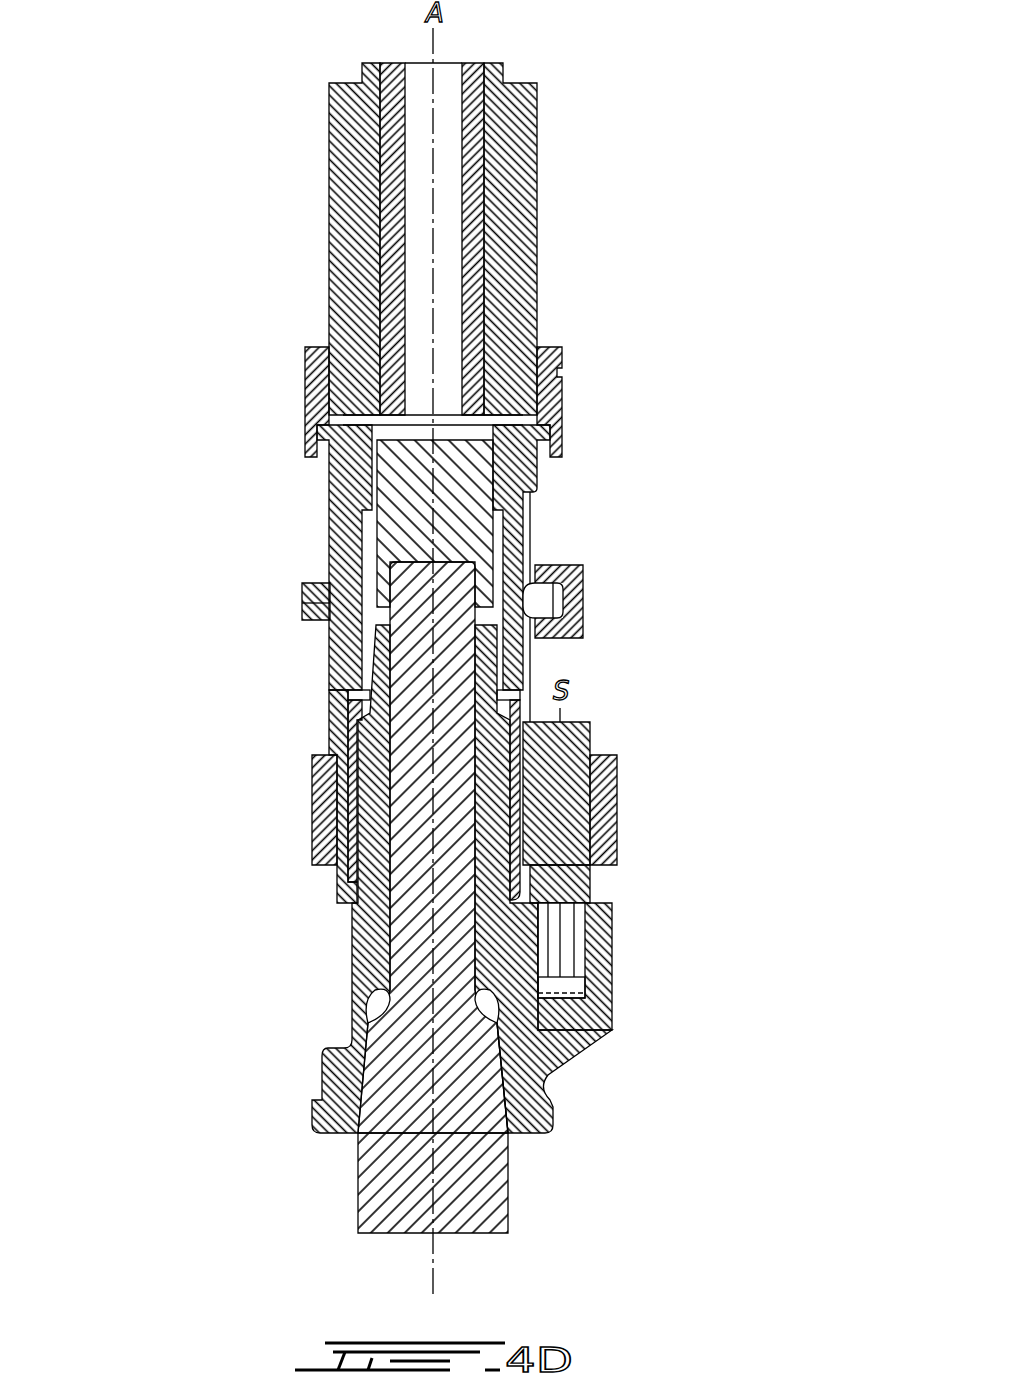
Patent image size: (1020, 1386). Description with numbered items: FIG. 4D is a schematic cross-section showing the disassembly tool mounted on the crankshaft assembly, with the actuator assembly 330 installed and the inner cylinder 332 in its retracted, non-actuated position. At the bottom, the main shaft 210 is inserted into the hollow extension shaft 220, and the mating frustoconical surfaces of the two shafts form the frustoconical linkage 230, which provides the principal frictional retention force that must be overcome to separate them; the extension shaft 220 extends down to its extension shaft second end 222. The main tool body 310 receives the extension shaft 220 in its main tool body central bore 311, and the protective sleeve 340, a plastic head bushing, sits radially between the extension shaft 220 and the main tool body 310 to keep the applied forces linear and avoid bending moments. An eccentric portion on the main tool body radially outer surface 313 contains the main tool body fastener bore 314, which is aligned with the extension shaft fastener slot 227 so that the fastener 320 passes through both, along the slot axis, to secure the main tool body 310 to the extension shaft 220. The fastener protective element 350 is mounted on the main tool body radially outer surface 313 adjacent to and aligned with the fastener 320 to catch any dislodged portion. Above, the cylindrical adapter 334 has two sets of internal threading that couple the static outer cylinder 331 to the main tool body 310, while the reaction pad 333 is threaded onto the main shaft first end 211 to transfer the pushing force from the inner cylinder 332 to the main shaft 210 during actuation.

The actuator assembly 330 is at (227, 222).
The outer cylinder 331 is at (510, 175).
The inner cylinder 332 is at (483, 90).
The cylindrical adapter 334 is at (322, 373).
The main tool body central bore 311 is at (362, 537).
The reaction pad 333 is at (397, 480).
The main shaft first end 211 is at (398, 578).
The main tool body 310 is at (302, 604).
The fastener protective element 350 is at (573, 603).
The main tool body radially outer surface 313 is at (332, 662).
The protective sleeve 340 is at (337, 893).
The main tool body fastener bore 314 is at (592, 814).
The fastener 320 is at (587, 886).
The extension shaft fastener slot 227 is at (583, 990).
The extension shaft 220 is at (555, 1088).
The extension shaft second end 222 is at (312, 1118).
The frustoconical linkage 230 is at (512, 1112).
The main shaft 210 is at (347, 1221).